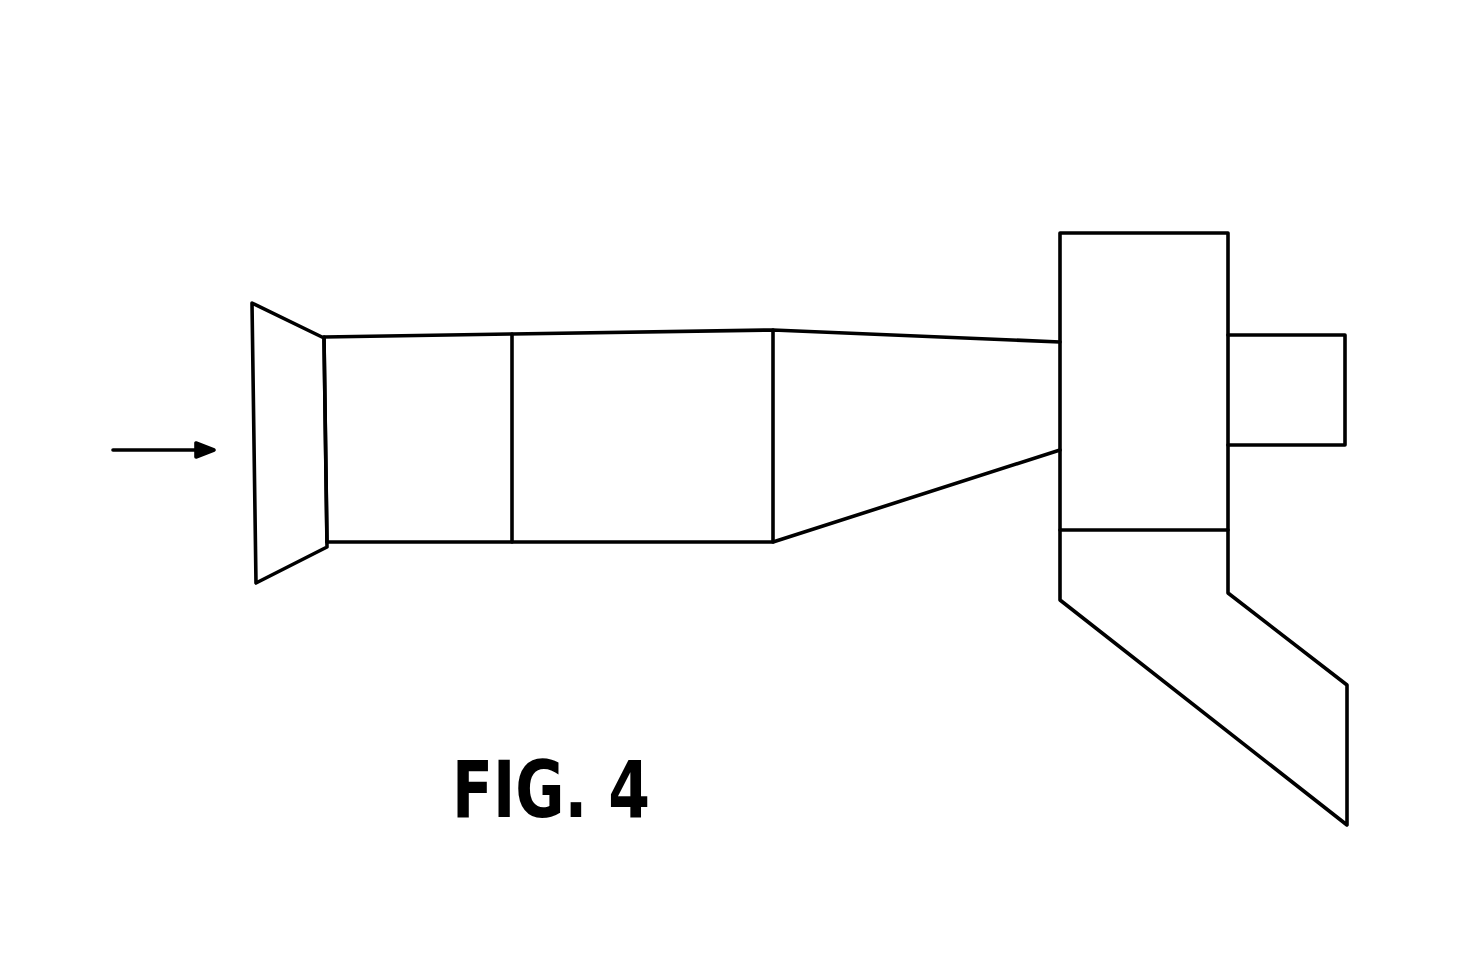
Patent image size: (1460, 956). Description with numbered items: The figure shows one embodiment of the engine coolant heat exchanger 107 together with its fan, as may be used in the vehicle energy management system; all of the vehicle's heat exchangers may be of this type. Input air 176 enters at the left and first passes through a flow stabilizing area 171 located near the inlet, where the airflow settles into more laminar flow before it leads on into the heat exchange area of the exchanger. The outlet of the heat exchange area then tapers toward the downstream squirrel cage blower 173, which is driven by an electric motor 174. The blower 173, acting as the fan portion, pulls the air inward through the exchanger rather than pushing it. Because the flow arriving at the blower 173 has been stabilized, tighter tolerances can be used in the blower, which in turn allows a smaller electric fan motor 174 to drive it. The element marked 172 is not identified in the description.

The engine coolant heat exchanger 107 is at (660, 323).
The flow stabilizing area 171 is at (409, 326).
The housing duct 172 is at (640, 560).
The squirrel cage blower 173 is at (1114, 224).
The electric motor 174 is at (1297, 328).
The input air 176 is at (169, 440).